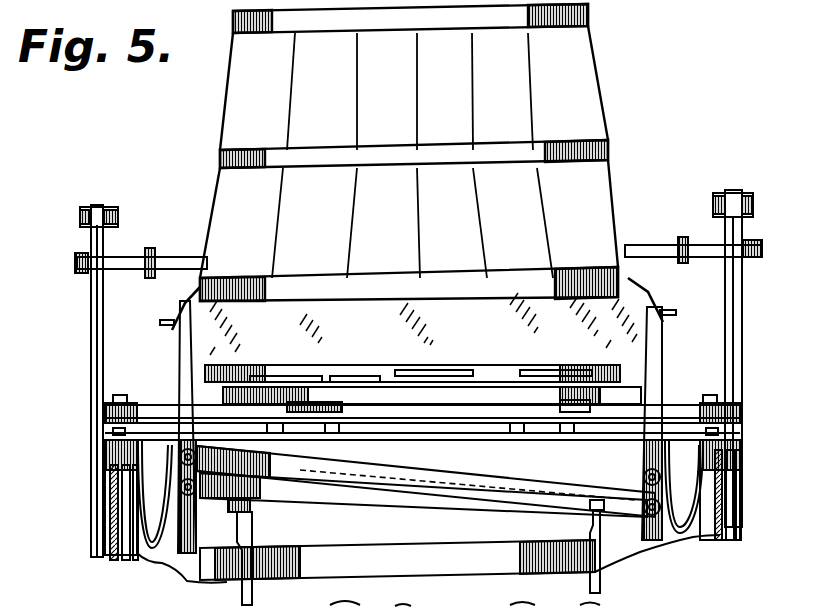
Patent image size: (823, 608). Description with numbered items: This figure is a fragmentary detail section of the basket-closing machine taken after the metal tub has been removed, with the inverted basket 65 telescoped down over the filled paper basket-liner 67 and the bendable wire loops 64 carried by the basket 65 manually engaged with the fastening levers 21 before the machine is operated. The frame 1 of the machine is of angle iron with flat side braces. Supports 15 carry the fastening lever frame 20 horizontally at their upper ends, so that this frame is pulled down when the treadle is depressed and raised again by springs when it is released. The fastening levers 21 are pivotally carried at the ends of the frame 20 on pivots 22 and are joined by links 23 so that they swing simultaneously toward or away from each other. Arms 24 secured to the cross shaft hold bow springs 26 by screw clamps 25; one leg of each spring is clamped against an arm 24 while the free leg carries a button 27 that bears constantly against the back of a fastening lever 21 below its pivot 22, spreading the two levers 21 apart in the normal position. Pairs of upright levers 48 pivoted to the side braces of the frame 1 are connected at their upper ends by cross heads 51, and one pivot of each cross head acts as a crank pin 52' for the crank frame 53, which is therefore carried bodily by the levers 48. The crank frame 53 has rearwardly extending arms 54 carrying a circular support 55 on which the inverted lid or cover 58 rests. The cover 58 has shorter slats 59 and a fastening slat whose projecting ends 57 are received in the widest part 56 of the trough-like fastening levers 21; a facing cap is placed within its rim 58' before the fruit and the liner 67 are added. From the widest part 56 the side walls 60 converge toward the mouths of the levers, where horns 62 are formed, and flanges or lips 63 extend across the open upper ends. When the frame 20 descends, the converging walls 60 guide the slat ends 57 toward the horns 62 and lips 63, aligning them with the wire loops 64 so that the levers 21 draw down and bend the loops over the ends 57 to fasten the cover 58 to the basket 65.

The frame 1 is at (105, 416).
The supports 15 is at (250, 532).
The fastening lever frame 20 is at (350, 490).
The fastening levers 21 is at (178, 393).
The pivots 22 is at (640, 477).
The links 23 is at (400, 477).
The arms 24 is at (122, 487).
The screw clamps 25 is at (110, 521).
The bow springs 26 is at (138, 552).
The button 27 is at (105, 452).
The upright levers 48 is at (92, 341).
The cross heads 51 is at (100, 240).
The crank pin 52' is at (402, 257).
The crank frame 53 is at (178, 262).
The arms 54 is at (560, 408).
The circular support 55 is at (432, 388).
The widest points 56 is at (200, 440).
The projecting ends of the fastening slat 57 is at (178, 376).
The lid or cover 58 is at (556, 352).
The rim of the cover 58' is at (361, 358).
The shorter slats 59 is at (284, 378).
The side walls 60 is at (184, 349).
The horns 62 is at (200, 330).
The flanges or lips 63 is at (160, 322).
The bendable wire loops 64 is at (188, 298).
The basket 65 is at (409, 152).
The paper basket-liner 67 is at (449, 319).